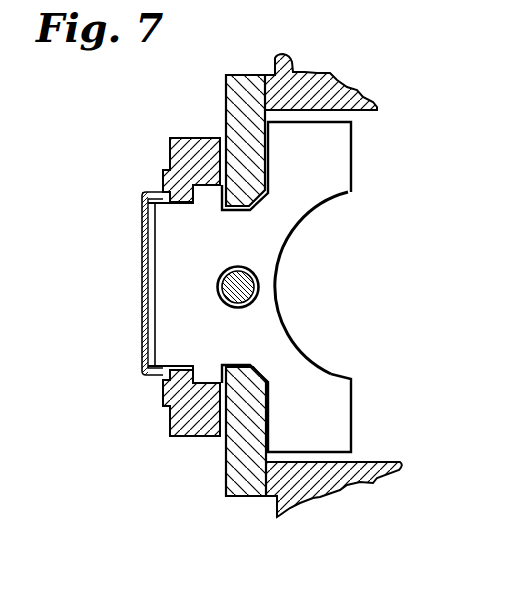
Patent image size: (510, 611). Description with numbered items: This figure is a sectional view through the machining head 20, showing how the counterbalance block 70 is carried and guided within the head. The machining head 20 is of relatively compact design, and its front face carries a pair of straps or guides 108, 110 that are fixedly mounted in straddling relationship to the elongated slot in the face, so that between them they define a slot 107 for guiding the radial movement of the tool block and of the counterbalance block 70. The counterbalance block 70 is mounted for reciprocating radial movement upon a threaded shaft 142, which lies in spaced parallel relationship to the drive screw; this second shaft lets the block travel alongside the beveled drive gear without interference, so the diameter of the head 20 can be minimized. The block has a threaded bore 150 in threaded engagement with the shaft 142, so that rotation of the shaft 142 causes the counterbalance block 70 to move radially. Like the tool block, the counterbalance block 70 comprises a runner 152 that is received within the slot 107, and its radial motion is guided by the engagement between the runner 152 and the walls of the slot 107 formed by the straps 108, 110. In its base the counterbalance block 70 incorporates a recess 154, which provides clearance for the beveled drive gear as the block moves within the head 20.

The machining head 20 is at (237, 92).
The counterbalance block 70 is at (332, 157).
The slot 107 is at (183, 367).
The strap 108 is at (188, 422).
The strap 110 is at (188, 153).
The threaded shaft 142 is at (259, 287).
The threaded bore 150 is at (258, 273).
The runner 152 is at (175, 239).
The recess 154 is at (332, 373).